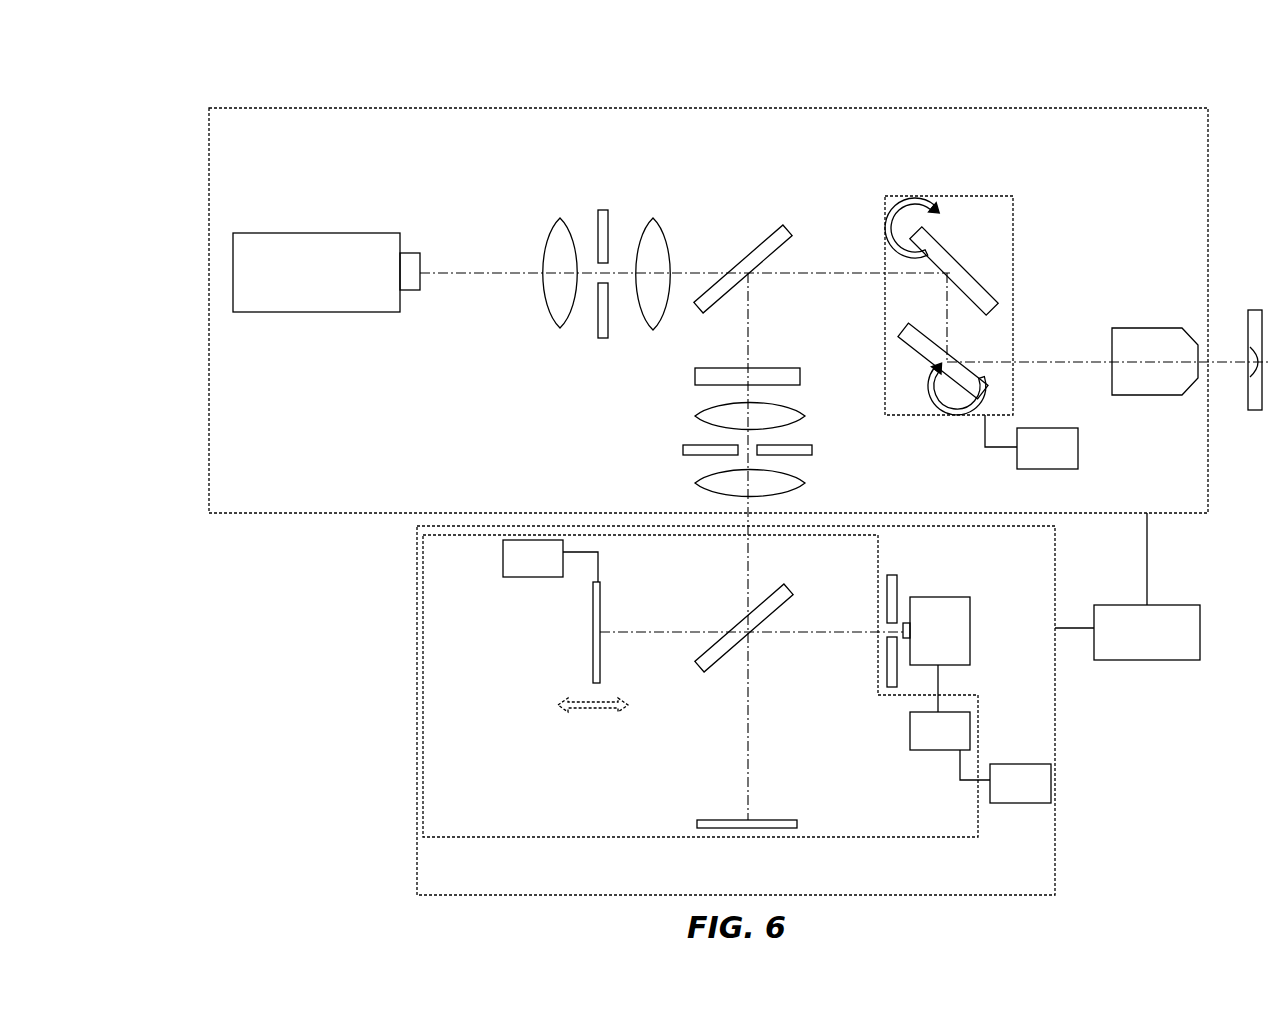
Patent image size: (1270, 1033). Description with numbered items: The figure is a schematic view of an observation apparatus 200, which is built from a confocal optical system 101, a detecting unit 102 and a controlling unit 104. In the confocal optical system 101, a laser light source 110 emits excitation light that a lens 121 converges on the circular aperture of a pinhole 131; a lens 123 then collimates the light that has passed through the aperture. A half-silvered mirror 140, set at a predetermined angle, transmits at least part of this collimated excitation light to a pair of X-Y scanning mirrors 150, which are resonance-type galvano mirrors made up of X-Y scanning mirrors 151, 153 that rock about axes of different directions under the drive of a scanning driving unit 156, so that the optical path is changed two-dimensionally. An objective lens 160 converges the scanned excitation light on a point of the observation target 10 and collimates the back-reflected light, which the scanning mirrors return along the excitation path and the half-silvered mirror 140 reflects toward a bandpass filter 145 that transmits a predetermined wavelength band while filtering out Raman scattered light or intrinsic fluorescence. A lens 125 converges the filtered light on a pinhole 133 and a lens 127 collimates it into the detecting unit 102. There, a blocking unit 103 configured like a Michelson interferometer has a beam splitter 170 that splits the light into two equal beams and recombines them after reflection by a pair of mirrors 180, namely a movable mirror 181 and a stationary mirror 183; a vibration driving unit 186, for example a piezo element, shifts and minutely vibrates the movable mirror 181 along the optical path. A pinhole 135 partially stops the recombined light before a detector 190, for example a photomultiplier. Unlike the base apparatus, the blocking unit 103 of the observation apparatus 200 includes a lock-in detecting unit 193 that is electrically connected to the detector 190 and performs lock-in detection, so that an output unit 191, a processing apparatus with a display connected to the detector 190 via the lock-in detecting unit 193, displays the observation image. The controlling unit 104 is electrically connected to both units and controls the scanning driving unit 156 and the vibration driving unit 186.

The observation apparatus 200 is at (420, 54).
The confocal optical system 101 is at (790, 108).
The detecting unit 102 is at (800, 897).
The blocking unit 103 is at (762, 840).
The controlling unit 104 is at (1178, 660).
The laser light source 110 is at (290, 232).
The lens 121 is at (557, 217).
The pinhole 131 is at (602, 208).
The lens 123 is at (653, 218).
The half-silvered mirror 140 is at (777, 220).
The pair of X-Y scanning mirrors 150 is at (1020, 271).
The X-Y scanning mirror 151 is at (943, 218).
The X-Y scanning mirror 153 is at (977, 383).
The scanning driving unit 156 is at (1050, 469).
The objective lens 160 is at (1167, 327).
The observation target 10 is at (1256, 310).
The bandpass filter 145 is at (695, 372).
The lens 125 is at (695, 416).
The pinhole 133 is at (683, 448).
The lens 127 is at (695, 482).
The beam splitter 170 is at (781, 587).
The pinhole 135 is at (897, 580).
The detector 190 is at (960, 597).
The lock-in detecting unit 193 is at (915, 752).
The output unit 191 is at (1045, 815).
The pair of mirrors 180 is at (612, 705).
The movable mirror 181 is at (595, 667).
The stationary mirror 183 is at (697, 822).
The vibration driving unit 186 is at (545, 578).